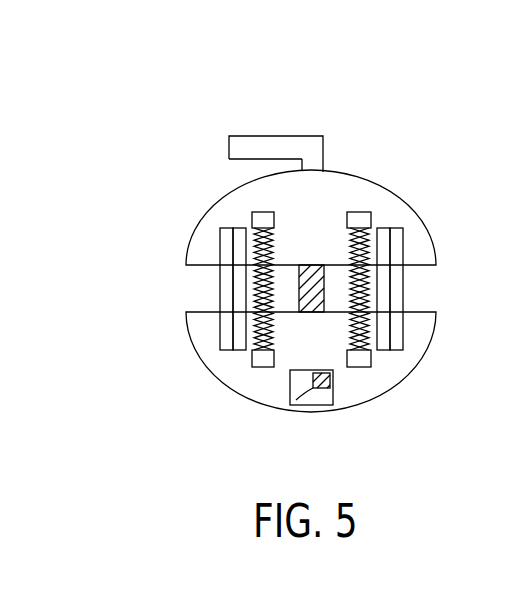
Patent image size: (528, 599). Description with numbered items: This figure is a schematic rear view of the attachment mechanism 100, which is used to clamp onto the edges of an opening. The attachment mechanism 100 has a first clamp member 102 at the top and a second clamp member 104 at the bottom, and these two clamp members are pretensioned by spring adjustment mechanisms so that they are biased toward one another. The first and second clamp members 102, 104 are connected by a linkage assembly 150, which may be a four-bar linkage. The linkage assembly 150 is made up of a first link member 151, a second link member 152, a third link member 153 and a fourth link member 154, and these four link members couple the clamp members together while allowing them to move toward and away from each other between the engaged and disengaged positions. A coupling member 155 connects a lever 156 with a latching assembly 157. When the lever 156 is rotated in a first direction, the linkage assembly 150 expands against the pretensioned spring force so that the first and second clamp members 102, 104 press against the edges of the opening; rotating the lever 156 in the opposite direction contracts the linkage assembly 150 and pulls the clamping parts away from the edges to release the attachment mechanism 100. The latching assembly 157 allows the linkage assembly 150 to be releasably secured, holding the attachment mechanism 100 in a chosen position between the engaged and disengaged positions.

The attachment mechanism 100 is at (194, 139).
The first clamp member 102 is at (473, 135).
The second clamp member 104 is at (475, 425).
The linkage assembly 150 is at (502, 223).
The first link member 151 is at (225, 325).
The second link member 152 is at (185, 377).
The third link member 153 is at (448, 348).
The fourth link member 154 is at (448, 311).
The coupling member 155 is at (262, 415).
The lever 156 is at (312, 105).
The latching assembly 157 is at (377, 470).